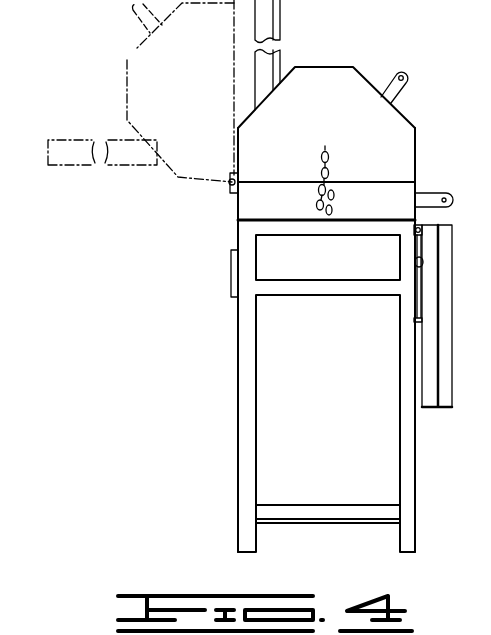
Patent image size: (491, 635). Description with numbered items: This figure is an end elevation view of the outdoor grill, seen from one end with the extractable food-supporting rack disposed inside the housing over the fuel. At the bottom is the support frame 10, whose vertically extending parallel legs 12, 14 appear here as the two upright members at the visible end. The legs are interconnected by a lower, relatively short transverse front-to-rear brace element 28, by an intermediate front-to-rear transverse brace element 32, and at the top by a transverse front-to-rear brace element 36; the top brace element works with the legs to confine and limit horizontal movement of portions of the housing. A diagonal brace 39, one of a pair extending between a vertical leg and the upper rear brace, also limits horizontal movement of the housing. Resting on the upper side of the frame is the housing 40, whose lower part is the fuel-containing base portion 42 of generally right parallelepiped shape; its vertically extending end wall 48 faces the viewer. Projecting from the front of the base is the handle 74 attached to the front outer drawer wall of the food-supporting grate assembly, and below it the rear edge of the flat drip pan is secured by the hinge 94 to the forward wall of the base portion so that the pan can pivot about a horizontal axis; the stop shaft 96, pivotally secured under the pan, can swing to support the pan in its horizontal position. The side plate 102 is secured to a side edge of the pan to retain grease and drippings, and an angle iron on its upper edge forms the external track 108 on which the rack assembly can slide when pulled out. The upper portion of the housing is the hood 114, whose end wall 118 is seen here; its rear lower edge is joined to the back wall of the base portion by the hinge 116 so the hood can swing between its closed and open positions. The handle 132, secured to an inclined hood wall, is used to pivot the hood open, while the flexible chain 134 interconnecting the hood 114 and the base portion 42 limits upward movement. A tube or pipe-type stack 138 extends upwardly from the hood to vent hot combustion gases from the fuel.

The support frame 10 is at (230, 410).
The leg 12 is at (247, 460).
The leg 14 is at (413, 490).
The front-to-rear brace element 28 is at (303, 520).
The front-to-rear transverse brace element 32 is at (277, 294).
The top front-to-rear brace element 36 is at (298, 230).
The diagonal brace 39 is at (232, 278).
The housing 40 is at (362, 58).
The fuel-containing base portion 42 is at (236, 205).
The end wall 48 is at (278, 211).
The handle 74 is at (428, 198).
The hinge 94 is at (414, 235).
The stop shaft 96 is at (416, 318).
The side plate 102 is at (432, 372).
The external track 108 is at (440, 402).
The hood 114 is at (158, 52).
The hinge 116 is at (229, 184).
The end wall 118 is at (336, 109).
The handle 132 is at (388, 77).
The flexible chain 134 is at (330, 163).
The stack 138 is at (268, 22).